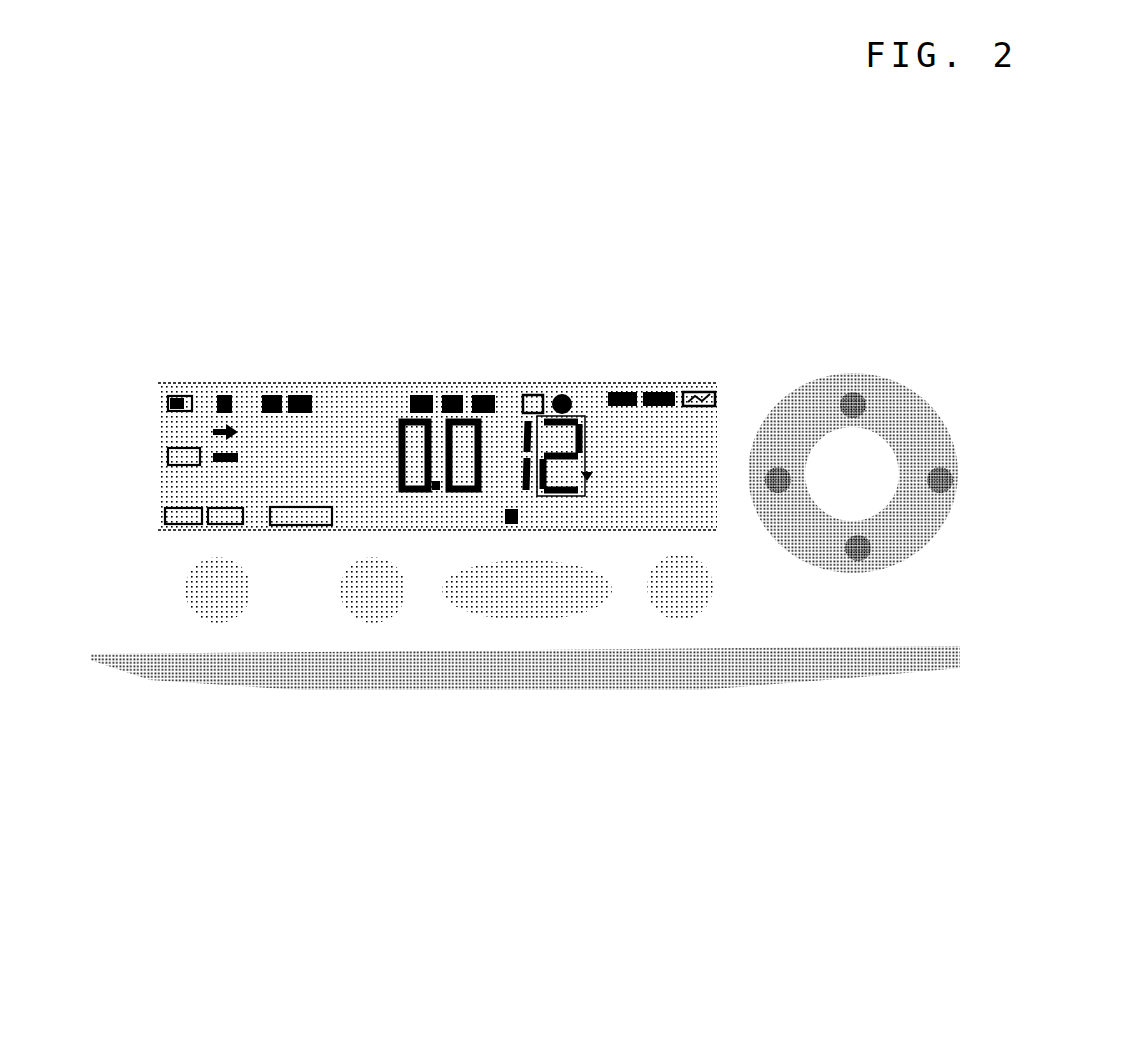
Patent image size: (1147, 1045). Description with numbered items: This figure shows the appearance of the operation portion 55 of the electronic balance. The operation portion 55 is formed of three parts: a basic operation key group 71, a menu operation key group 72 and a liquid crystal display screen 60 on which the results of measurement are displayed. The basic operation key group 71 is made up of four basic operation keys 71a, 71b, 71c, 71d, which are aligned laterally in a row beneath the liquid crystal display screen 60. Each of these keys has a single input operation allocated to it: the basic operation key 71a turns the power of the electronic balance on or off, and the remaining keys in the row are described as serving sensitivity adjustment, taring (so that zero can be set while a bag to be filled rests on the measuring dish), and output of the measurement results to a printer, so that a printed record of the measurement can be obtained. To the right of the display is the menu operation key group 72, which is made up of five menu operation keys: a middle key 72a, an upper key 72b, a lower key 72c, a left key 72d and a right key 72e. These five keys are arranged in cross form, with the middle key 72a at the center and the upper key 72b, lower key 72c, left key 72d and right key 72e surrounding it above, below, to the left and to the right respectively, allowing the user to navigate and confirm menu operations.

The operation portion 55 is at (484, 142).
The liquid crystal display screen 60 is at (366, 445).
The basic operation key group 71 is at (449, 722).
The basic operation key 71a is at (222, 598).
The basic operation key 71b is at (372, 592).
The basic operation key 71c is at (527, 592).
The basic operation key 71d is at (683, 592).
The menu operation key group 72 is at (879, 364).
The middle key 72a is at (860, 457).
The upper key 72b is at (852, 400).
The lower key 72c is at (845, 547).
The left key 72d is at (770, 467).
The right key 72e is at (935, 465).